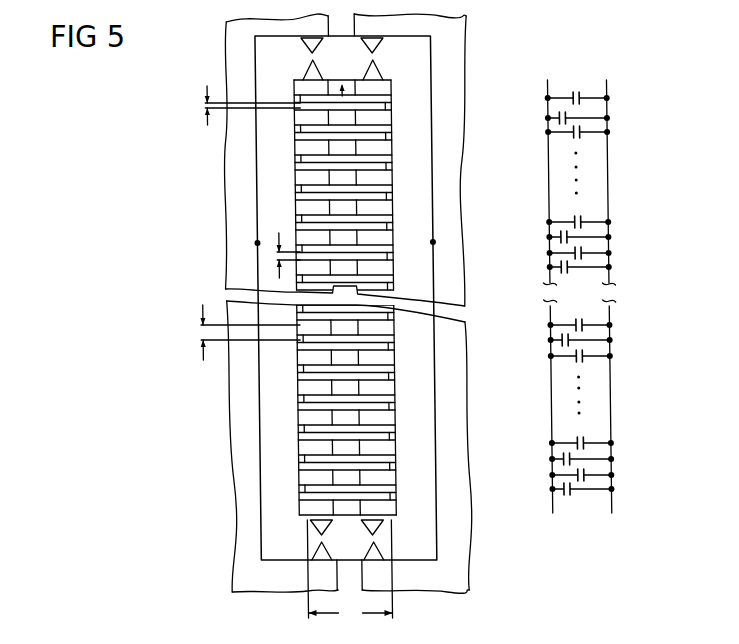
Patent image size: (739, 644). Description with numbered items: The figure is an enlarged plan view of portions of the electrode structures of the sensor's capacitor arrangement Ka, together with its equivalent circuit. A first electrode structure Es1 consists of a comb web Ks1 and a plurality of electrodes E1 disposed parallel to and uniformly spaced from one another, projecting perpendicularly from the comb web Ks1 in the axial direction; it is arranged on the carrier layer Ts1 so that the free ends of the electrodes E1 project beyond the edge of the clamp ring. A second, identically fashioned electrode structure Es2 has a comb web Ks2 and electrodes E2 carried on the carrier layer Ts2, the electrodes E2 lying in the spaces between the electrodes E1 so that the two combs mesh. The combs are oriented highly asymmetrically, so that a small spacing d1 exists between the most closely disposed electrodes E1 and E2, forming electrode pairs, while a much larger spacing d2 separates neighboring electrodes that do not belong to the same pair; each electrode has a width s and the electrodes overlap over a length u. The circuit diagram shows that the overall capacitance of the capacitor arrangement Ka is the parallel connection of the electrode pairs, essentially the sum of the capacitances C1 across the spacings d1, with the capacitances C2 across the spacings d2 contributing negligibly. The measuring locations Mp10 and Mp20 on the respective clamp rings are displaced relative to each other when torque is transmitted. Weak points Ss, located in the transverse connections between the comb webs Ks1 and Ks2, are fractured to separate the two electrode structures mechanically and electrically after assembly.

The capacitor arrangement Ka is at (214, 192).
The comb web Ks1 is at (264, 146).
The comb web Ks2 is at (423, 144).
The carrier layer Ts1 is at (240, 560).
The carrier layer Ts2 is at (436, 573).
The electrode structure Es1 is at (272, 450).
The electrode structure Es2 is at (413, 427).
The electrodes E1 is at (306, 401).
The electrodes E2 is at (379, 203).
The weak points Ss is at (372, 50).
The measuring location Mp10 is at (252, 243).
The measuring location Mp20 is at (432, 242).
The spacing d1 is at (204, 105).
The spacing d2 is at (197, 327).
The width of an electrode s is at (284, 253).
The length of the overlap of the electrodes u is at (349, 573).
The capacitances C1 is at (580, 94).
The capacitances C2 is at (557, 113).